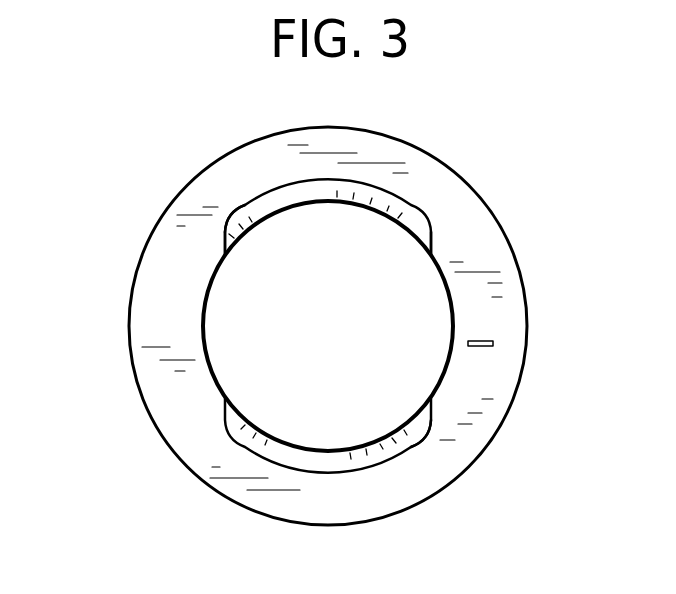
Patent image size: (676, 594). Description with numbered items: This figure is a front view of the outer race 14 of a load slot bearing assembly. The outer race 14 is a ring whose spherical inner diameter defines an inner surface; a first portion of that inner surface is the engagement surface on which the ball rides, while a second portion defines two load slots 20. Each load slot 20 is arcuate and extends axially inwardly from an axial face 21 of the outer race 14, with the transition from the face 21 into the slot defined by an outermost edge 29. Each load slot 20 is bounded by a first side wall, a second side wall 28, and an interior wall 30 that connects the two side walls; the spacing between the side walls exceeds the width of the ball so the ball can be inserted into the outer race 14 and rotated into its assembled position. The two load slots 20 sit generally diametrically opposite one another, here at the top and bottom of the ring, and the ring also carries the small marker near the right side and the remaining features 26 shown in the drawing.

The outer race 14 is at (110, 135).
The load slot 20 is at (375, 182).
The axial face 21 is at (482, 346).
The first pad end 26 is at (225, 237).
The second side wall 28 is at (430, 237).
The outermost edge 29 is at (252, 198).
The interior wall 30 is at (298, 195).